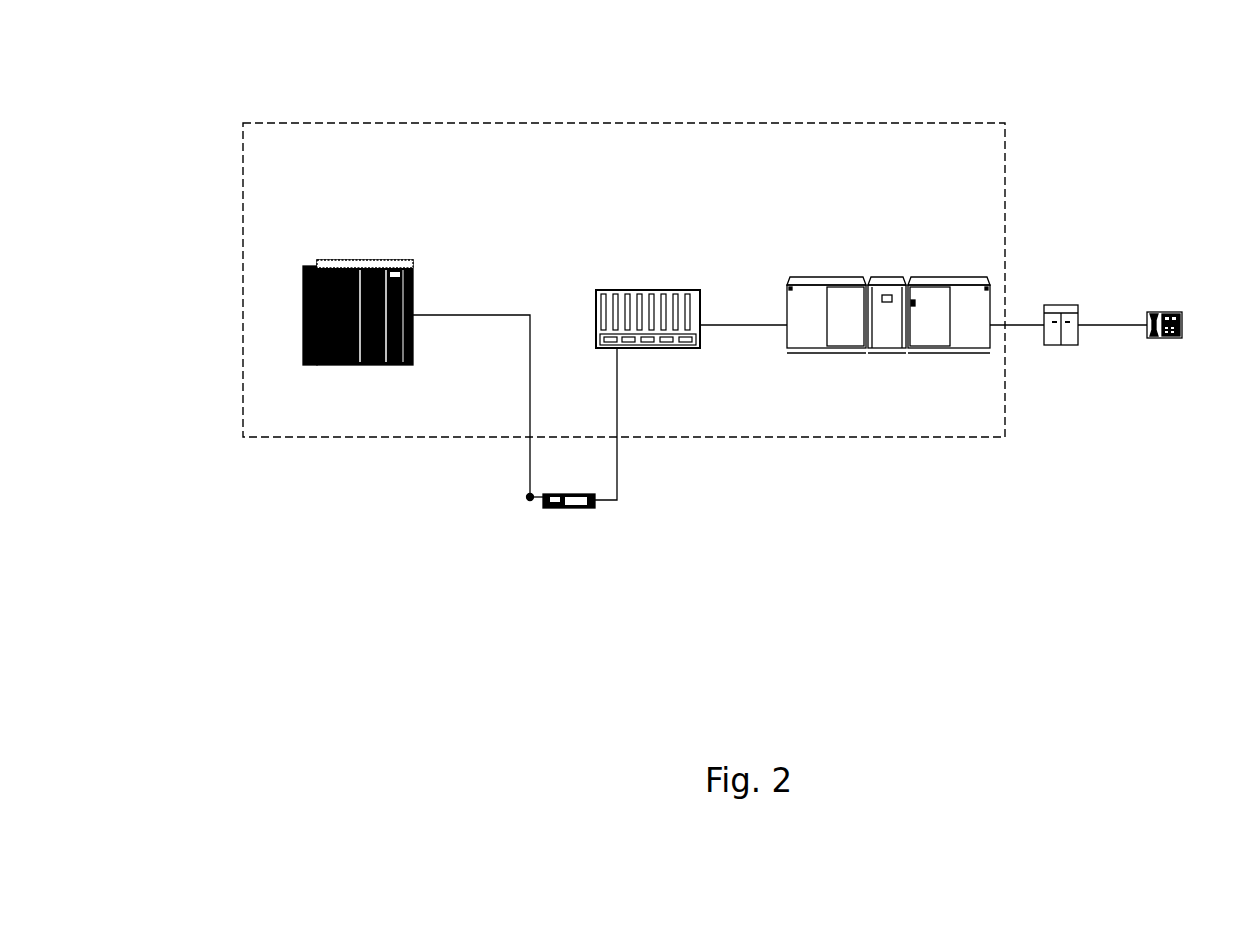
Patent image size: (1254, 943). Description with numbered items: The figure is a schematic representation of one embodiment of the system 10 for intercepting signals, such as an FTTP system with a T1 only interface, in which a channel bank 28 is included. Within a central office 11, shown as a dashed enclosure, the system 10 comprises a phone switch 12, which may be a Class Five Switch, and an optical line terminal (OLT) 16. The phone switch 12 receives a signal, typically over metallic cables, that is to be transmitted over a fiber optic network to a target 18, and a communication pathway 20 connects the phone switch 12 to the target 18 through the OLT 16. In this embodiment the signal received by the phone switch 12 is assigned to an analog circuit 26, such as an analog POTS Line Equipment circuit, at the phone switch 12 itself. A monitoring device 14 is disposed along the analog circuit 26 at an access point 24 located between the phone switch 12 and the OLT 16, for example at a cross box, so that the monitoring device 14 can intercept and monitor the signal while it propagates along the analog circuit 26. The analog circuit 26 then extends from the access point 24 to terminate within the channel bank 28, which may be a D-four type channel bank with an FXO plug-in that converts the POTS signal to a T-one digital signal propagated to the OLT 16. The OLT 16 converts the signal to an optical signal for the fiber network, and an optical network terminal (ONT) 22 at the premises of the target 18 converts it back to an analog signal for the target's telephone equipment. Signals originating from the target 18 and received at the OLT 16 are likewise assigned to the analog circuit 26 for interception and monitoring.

The system 10 is at (312, 472).
The central office 11 is at (903, 117).
The phone switch 12 is at (335, 263).
The monitoring device 14 is at (582, 507).
The optical line terminal (OLT) 16 is at (828, 273).
The target 18 is at (1177, 312).
The communication pathway 20 is at (512, 313).
The optical network terminal (ONT) 22 is at (1068, 303).
The access point 24 is at (527, 496).
The analog circuit 26 is at (615, 428).
The channel bank 28 is at (628, 290).